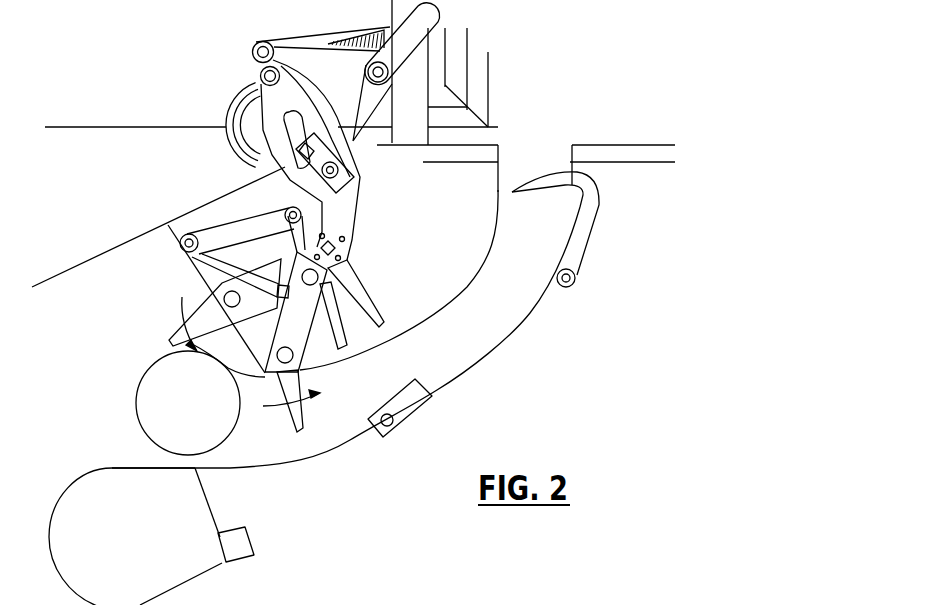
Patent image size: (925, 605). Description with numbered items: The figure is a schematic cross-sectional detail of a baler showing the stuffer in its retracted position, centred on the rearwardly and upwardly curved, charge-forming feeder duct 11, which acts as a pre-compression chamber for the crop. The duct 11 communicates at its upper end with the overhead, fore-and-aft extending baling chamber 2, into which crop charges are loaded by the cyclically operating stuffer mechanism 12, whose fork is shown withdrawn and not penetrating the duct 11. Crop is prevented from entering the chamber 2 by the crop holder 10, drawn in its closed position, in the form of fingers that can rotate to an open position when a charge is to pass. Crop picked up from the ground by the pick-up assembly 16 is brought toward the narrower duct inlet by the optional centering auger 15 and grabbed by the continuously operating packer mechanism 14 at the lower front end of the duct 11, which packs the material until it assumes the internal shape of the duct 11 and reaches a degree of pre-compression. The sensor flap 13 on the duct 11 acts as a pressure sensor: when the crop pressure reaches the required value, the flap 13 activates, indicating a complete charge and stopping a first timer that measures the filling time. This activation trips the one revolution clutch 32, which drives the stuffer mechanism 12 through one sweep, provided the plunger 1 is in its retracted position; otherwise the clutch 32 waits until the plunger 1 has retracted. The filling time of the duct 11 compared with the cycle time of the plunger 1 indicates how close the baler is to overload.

The plunger 1 is at (529, 599).
The baling chamber 2 is at (537, 80).
The crop holder 10 is at (552, 167).
The feeder duct 11 is at (498, 318).
The stuffer mechanism 12 is at (372, 296).
The sensor flap 13 is at (418, 400).
The packer mechanism 14 is at (307, 433).
The centering auger 15 is at (205, 443).
The pick-up assembly 16 is at (182, 567).
The one revolution clutch 32 is at (230, 100).